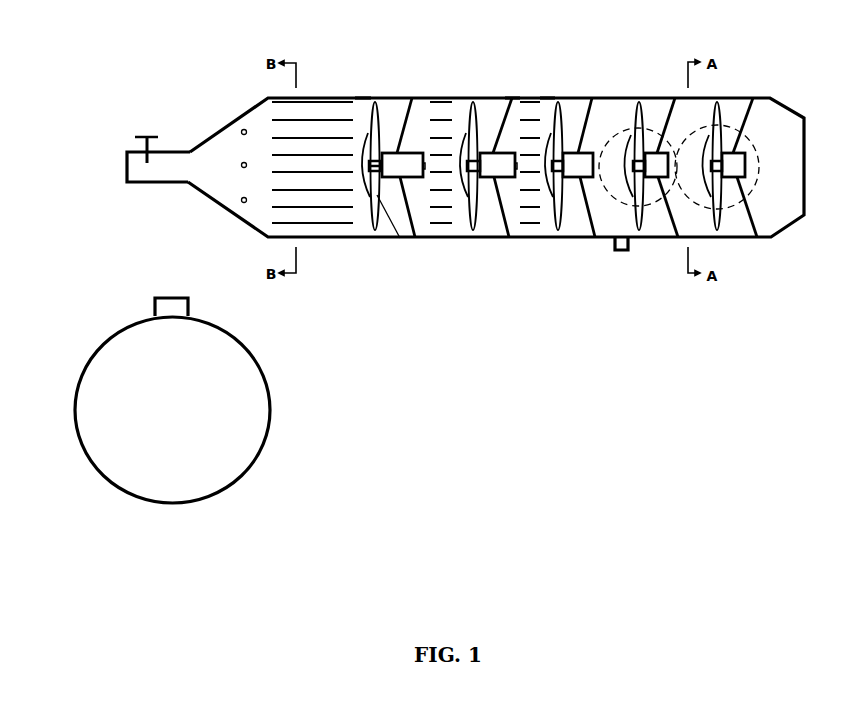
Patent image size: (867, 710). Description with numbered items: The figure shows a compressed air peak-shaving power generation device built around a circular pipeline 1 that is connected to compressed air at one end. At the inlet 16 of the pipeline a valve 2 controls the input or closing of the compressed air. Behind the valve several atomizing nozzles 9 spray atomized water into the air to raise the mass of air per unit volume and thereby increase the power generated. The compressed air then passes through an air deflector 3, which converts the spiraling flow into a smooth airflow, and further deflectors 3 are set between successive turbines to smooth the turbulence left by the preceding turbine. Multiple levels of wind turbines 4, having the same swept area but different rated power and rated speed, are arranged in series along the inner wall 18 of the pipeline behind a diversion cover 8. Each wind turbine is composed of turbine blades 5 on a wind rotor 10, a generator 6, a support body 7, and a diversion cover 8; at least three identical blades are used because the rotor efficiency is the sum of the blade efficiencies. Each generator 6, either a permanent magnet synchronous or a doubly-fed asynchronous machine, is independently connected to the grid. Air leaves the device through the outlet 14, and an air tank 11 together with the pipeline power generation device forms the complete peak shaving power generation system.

The pipeline 1 is at (312, 239).
The valve 2 is at (150, 136).
The deflector 3 is at (345, 155).
The wind turbine 4 is at (622, 132).
The turbine blade 5 is at (377, 112).
The generator 6 is at (408, 177).
The support body 7 is at (503, 110).
The diversion cover 8 is at (363, 98).
The atomizing nozzle 9 is at (242, 198).
The wind rotor 10 is at (378, 178).
The air tank 11 is at (172, 388).
The outlet 14 is at (615, 250).
The inlet 16 is at (134, 170).
The inner wall 18 is at (512, 99).